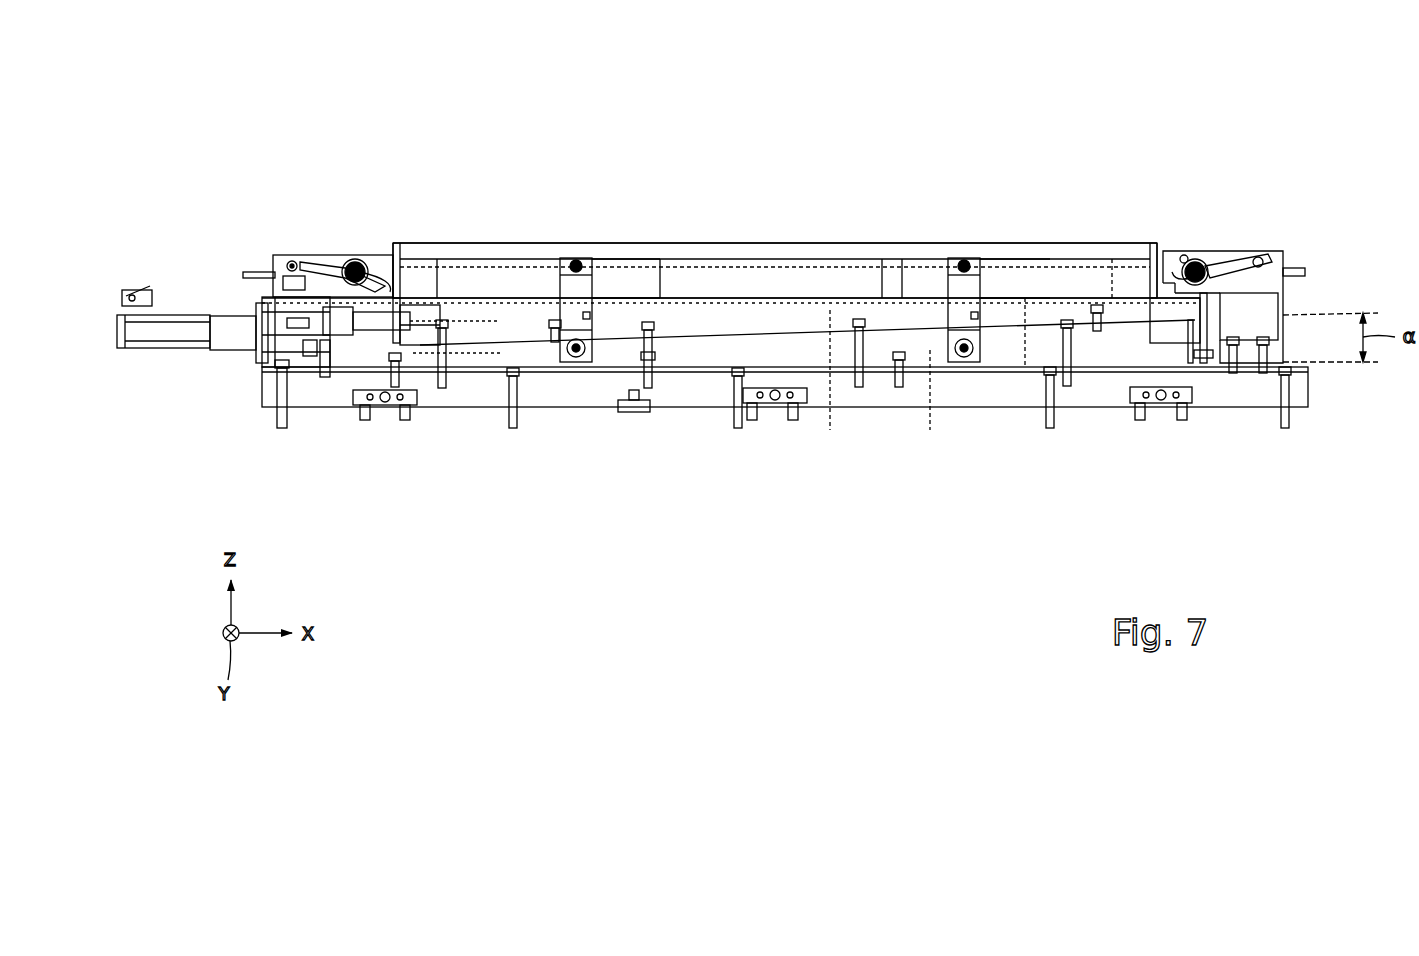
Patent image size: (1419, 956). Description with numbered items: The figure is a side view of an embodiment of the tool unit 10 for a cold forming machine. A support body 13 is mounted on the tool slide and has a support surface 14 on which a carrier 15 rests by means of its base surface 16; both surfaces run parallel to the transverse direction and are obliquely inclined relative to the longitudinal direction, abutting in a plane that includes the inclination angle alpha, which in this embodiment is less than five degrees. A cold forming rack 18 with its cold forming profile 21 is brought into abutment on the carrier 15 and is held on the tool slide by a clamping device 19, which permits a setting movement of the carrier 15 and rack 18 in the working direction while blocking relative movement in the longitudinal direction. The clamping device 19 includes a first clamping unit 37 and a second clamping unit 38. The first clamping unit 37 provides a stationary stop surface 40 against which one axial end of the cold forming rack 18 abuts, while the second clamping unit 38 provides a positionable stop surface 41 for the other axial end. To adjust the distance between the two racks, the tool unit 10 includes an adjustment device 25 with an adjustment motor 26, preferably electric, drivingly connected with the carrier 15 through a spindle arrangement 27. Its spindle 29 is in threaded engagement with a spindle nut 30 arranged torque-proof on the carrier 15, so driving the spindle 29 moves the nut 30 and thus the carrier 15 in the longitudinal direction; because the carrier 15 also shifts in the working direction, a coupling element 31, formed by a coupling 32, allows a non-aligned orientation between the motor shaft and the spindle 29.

The tool unit 10 is at (1206, 100).
The support body 13 is at (933, 352).
The support surface 14 is at (722, 326).
The carrier 15 is at (828, 318).
The base surface 16 is at (690, 342).
The cold forming rack 18 is at (852, 250).
The clamping device 19 is at (796, 136).
The cold forming profile 21 is at (805, 230).
The adjustment device 25 is at (200, 360).
The adjustment motor 26 is at (200, 310).
The spindle arrangement 27 is at (413, 305).
The spindle 29 is at (412, 337).
The spindle nut 30 is at (350, 355).
The coupling element 31 is at (305, 255).
The coupling 32 is at (282, 237).
The first clamping unit 37 is at (318, 190).
The second clamping unit 38 is at (1240, 258).
The stationary stop surface 40 is at (404, 256).
The positionable stop surface 41 is at (1148, 268).